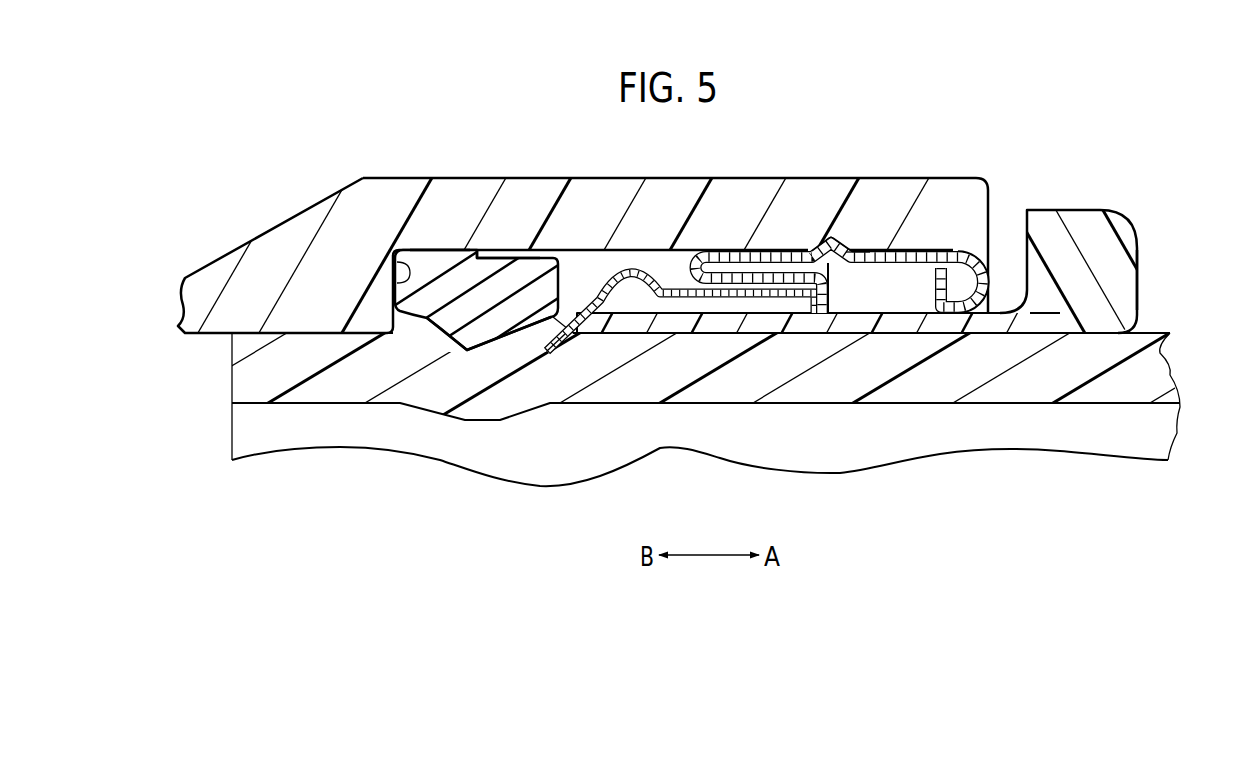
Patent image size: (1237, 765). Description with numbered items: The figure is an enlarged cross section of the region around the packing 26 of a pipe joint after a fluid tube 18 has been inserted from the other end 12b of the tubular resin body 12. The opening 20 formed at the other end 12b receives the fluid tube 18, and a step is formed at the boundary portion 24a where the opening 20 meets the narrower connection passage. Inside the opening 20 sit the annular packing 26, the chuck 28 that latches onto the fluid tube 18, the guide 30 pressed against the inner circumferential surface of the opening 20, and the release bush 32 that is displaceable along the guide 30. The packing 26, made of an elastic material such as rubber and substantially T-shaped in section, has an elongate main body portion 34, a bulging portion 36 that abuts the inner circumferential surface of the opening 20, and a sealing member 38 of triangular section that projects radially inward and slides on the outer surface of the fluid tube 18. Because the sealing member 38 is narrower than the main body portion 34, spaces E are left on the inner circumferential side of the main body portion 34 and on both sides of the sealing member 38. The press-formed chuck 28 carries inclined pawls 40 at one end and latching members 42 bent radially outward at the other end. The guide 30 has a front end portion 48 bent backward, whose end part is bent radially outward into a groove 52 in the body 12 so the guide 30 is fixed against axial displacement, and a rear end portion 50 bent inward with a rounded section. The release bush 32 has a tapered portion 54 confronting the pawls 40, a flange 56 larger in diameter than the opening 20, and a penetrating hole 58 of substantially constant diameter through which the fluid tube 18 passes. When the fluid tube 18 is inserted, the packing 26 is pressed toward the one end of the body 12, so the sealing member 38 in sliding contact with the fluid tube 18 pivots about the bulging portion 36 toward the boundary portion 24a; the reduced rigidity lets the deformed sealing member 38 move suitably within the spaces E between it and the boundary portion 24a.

The body 12 is at (273, 222).
The other end of the body 12b is at (962, 190).
The fluid tube 18 is at (1157, 367).
The opening 20 is at (640, 266).
The boundary portion 24a is at (401, 258).
The packing 26 is at (526, 255).
The chuck 28 is at (650, 250).
The guide 30 is at (925, 246).
The release bush 32 is at (1133, 216).
The main body portion 34 is at (442, 252).
The bulging portion 36 is at (501, 256).
The sealing member 38 is at (475, 347).
The inclined pawls 40 is at (559, 353).
The latching members 42 is at (829, 270).
The front end portion 48 is at (725, 258).
The rear end portion 50 is at (968, 315).
The groove 52 is at (857, 261).
The tapered portion 54 is at (682, 320).
The flange 56 is at (1127, 270).
The penetrating hole 58 is at (1047, 333).
The spaces E is at (416, 333).